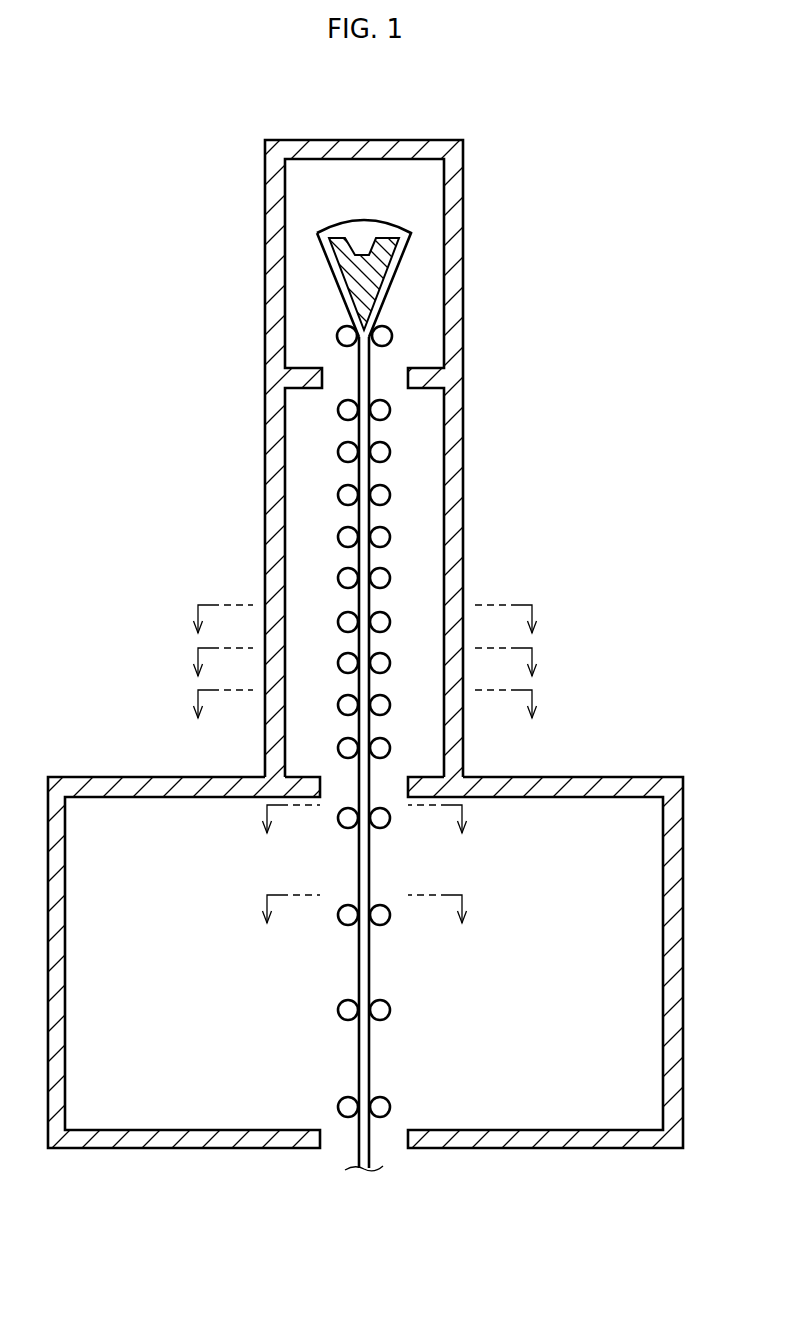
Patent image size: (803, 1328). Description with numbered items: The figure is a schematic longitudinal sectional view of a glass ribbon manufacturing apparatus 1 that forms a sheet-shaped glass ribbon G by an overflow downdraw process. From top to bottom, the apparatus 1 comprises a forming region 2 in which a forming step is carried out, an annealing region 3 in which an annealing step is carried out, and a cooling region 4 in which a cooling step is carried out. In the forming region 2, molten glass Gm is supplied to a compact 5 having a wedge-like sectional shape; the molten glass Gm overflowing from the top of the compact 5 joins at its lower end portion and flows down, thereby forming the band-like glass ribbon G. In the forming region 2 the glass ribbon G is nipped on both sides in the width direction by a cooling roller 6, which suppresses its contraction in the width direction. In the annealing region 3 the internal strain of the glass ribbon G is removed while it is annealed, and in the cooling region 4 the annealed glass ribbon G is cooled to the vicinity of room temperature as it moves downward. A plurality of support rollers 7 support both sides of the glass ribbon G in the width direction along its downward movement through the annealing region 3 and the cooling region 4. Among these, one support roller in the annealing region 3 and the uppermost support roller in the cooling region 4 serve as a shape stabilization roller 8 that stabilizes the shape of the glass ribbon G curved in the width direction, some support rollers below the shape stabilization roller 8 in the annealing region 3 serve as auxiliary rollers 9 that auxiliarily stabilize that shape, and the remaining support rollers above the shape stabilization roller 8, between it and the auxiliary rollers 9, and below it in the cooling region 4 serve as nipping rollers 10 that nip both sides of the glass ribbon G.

The glass ribbon manufacturing apparatus 1 is at (586, 207).
The forming region 2 is at (418, 307).
The annealing region 3 is at (418, 563).
The cooling region 4 is at (572, 933).
The compact 5 is at (380, 263).
The cooling roller 6 is at (338, 330).
The support rollers 7 is at (336, 398).
The shape stabilization roller 8 is at (392, 620).
The auxiliary rollers 9 is at (392, 693).
The nipping rollers 10 is at (392, 398).
The glass ribbon G is at (372, 773).
The molten glass Gm is at (353, 230).